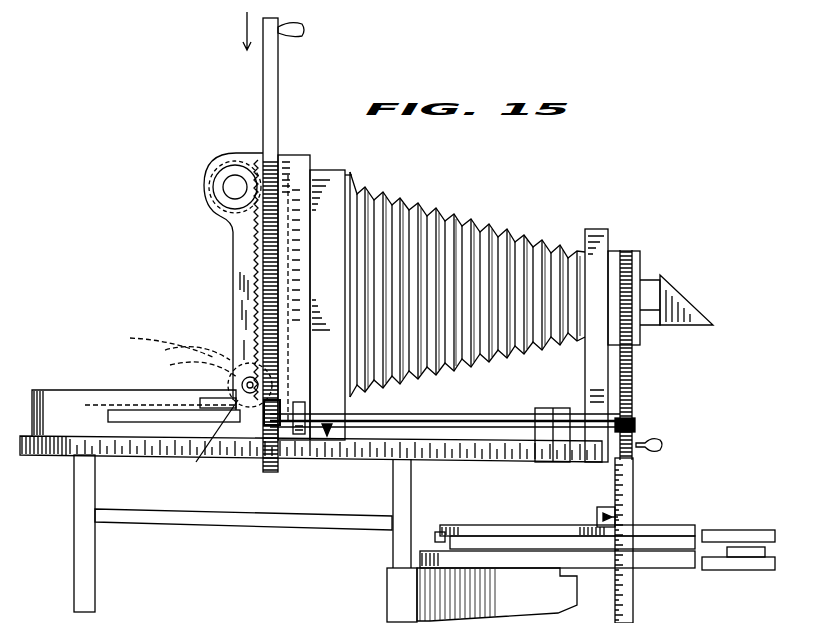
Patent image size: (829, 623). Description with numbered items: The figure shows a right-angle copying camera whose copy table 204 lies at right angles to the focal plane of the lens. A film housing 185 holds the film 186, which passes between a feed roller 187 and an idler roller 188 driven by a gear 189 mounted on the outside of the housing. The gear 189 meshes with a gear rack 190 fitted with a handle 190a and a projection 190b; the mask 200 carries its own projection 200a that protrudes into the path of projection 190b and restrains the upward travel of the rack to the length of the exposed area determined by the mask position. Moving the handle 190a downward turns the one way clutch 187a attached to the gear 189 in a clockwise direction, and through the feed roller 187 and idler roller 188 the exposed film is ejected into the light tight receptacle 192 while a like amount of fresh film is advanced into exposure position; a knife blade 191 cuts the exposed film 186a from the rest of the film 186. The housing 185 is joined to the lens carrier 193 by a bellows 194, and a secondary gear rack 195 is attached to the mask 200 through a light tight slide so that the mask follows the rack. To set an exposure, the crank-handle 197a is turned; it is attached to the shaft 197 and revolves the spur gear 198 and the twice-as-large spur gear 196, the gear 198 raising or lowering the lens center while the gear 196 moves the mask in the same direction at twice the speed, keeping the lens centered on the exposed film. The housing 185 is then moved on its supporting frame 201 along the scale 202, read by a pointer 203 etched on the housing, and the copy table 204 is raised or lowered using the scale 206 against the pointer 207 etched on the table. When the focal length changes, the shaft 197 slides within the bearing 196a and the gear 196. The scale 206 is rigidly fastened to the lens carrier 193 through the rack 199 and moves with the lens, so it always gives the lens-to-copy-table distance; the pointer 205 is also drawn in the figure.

The film housing 185 is at (226, 275).
The film 186 is at (235, 233).
The exposed film 186a is at (126, 404).
The feed roller 187 is at (201, 361).
The one way clutch 187a is at (170, 341).
The idler roller 188 is at (286, 378).
The gear 189 is at (242, 384).
The gear rack 190 is at (262, 315).
The handle 190a is at (305, 30).
The projection 190b is at (355, 173).
The knife blade 191 is at (209, 442).
The receptacle 192 is at (74, 390).
The lens carrier 193 is at (640, 268).
The bellows 194 is at (478, 220).
The secondary gear rack 195 is at (280, 162).
The spur gear 196 is at (280, 440).
The bearing 196a is at (552, 408).
The shaft 197 is at (488, 416).
The crank-handle 197a is at (662, 445).
The spur gear 198 is at (662, 390).
The rack 199 is at (632, 363).
The mask 200 is at (310, 302).
The projection 200a is at (292, 186).
The supporting frame 201 is at (168, 455).
The scale 202 is at (385, 458).
The pointer 203 is at (342, 397).
The copy table 204 is at (740, 572).
The pointer 205 is at (710, 312).
The scale 206 is at (633, 488).
The pointer 207 is at (596, 512).